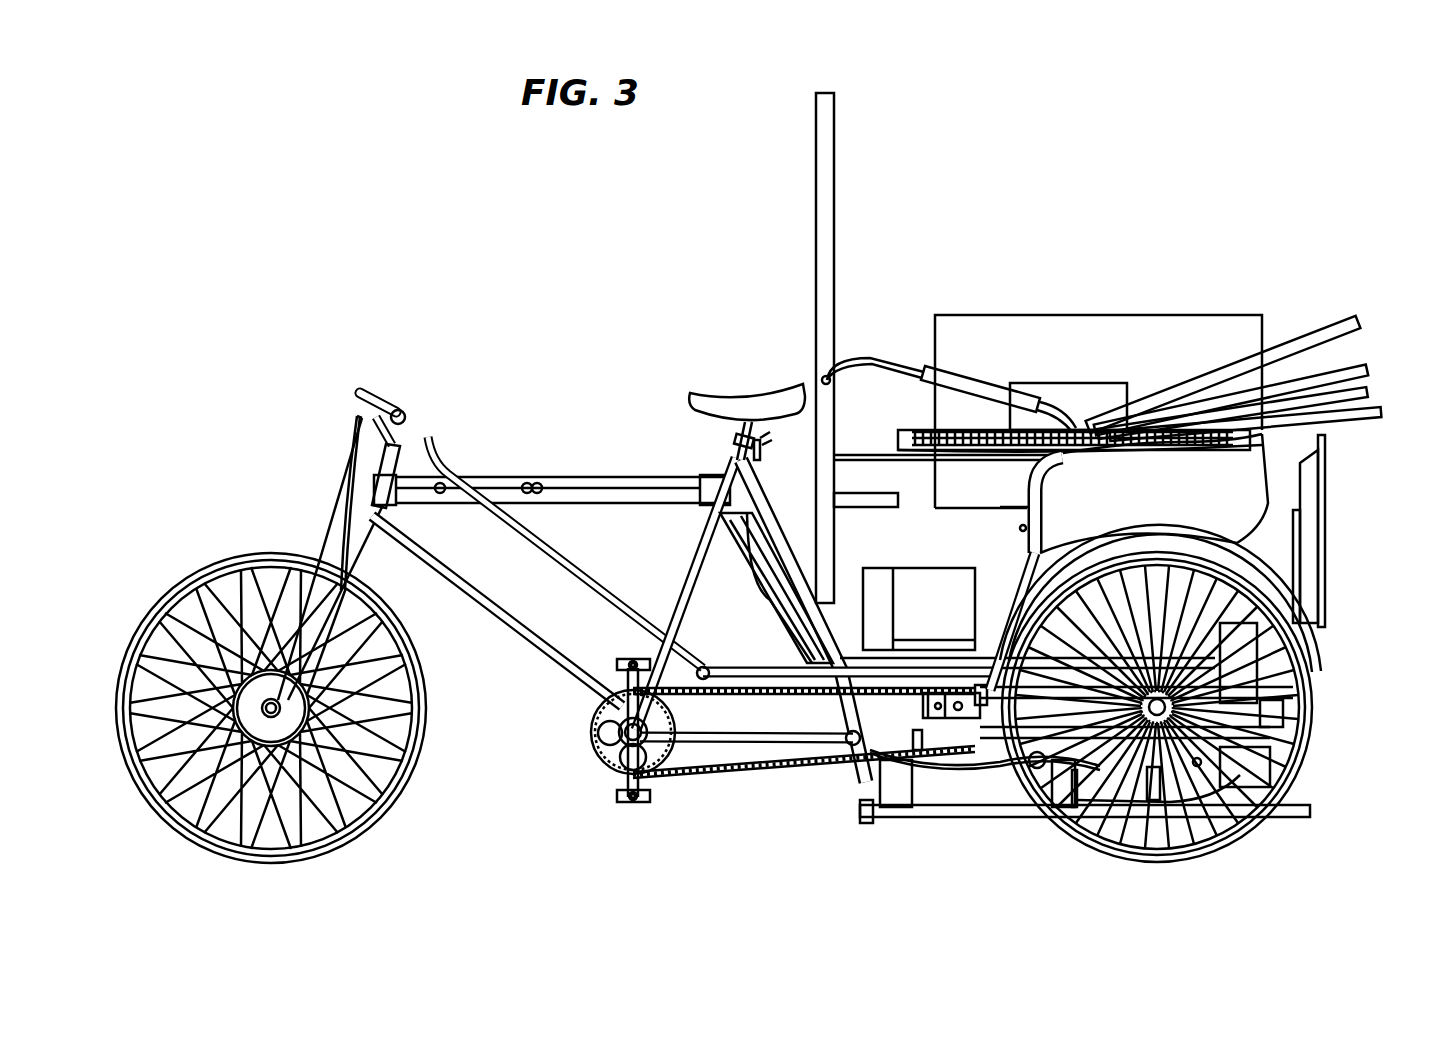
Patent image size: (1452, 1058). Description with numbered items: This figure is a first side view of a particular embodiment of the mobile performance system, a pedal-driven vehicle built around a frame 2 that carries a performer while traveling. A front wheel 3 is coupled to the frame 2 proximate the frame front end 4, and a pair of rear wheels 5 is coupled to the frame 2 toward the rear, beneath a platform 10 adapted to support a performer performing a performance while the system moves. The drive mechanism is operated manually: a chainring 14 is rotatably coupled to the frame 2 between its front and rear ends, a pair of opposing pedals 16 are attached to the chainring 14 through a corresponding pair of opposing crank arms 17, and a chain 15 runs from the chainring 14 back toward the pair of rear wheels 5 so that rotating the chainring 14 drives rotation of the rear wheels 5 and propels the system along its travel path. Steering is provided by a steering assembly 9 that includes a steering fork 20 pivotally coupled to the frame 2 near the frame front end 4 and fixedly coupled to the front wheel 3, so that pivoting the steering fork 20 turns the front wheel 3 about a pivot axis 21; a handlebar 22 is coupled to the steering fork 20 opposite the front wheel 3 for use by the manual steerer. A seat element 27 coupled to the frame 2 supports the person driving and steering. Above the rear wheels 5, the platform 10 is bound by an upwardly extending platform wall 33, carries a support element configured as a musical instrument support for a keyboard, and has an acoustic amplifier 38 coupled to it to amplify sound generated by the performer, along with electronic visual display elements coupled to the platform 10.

The frame 2 is at (716, 760).
The front wheel 3 is at (205, 578).
The frame front end 4 is at (655, 738).
The pair of rear wheels 5 is at (1308, 710).
The steering assembly 9 is at (384, 382).
The platform 10 is at (930, 660).
The chainring 14 is at (612, 742).
The chain 15 is at (778, 756).
The pair of opposing pedals 16 is at (620, 660).
The pair of opposing crank arms 17 is at (602, 726).
The steering fork 20 is at (345, 560).
The pivot axis 21 is at (401, 410).
The handlebar 22 is at (406, 418).
The seat element 27 is at (740, 410).
The platform wall 33 is at (1228, 488).
The acoustic amplifier 38 is at (922, 605).